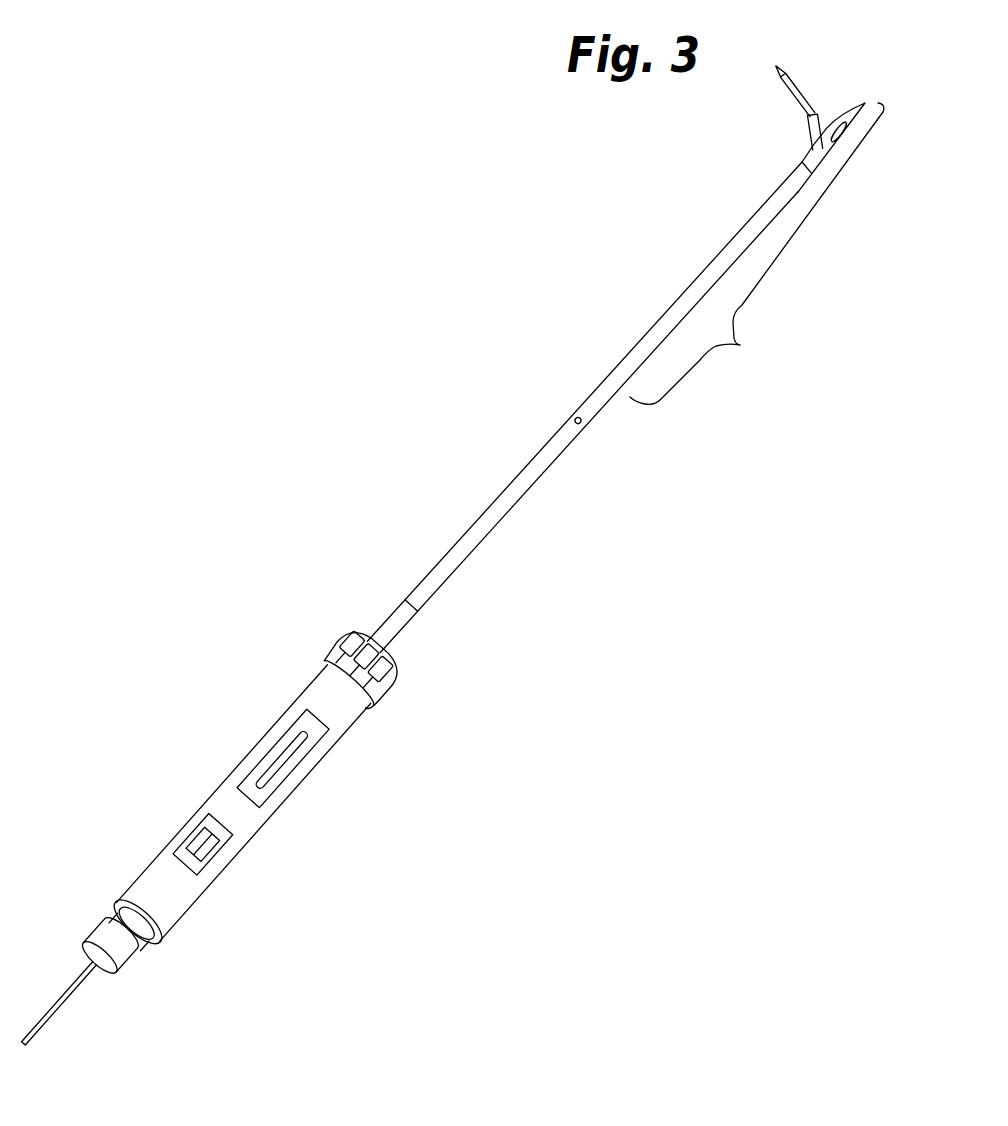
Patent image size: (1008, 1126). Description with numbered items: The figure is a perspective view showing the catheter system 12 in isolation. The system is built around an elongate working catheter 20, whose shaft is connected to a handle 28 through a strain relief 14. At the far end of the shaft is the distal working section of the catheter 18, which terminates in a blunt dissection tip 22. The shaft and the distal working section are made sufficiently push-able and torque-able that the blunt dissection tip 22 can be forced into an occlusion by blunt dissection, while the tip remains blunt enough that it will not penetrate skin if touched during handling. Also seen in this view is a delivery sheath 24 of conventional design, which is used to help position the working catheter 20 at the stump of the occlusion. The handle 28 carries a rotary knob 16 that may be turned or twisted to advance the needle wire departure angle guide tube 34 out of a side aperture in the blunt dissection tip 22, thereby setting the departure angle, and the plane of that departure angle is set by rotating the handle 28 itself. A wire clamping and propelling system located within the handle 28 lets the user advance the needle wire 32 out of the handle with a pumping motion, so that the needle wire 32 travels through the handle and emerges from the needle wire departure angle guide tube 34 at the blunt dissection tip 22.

The catheter system 12 is at (545, 298).
The strain relief 14 is at (410, 624).
The rotary knob 16 is at (335, 645).
The distal working section of the catheter 18 is at (757, 253).
The working catheter 20 is at (577, 414).
The blunt dissection tip 22 is at (847, 103).
The delivery sheath 24 is at (107, 926).
The handle 28 is at (327, 760).
The needle wire 32 is at (787, 72).
The needle wire departure angle guide tube 34 is at (810, 129).